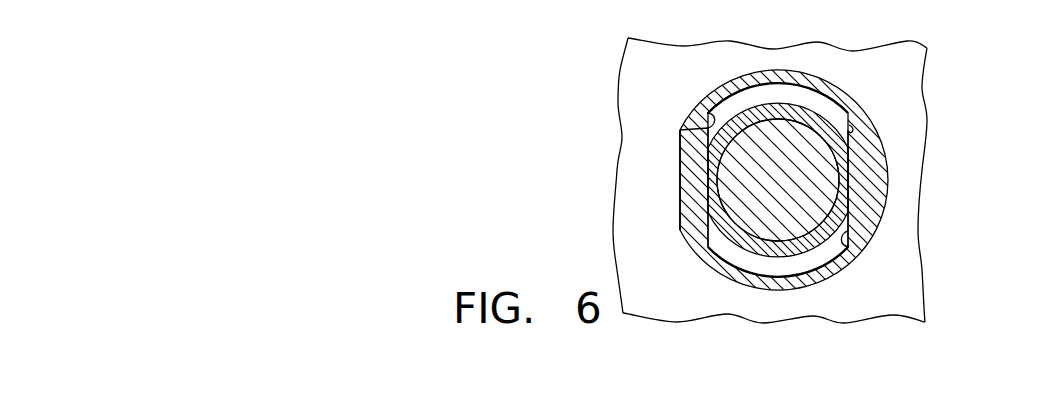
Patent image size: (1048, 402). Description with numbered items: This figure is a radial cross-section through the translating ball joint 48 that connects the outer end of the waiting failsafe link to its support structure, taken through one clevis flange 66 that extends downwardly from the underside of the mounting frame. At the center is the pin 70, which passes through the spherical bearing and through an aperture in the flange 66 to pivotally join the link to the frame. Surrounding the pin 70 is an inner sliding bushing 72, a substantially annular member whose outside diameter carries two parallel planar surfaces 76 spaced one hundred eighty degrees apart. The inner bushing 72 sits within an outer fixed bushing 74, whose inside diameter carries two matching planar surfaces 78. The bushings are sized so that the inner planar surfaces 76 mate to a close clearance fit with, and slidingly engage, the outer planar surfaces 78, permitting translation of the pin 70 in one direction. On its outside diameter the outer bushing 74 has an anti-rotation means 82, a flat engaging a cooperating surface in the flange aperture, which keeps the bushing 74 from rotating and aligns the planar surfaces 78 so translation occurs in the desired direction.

The eighth joint 48 is at (813, 180).
The first flange 66 is at (852, 311).
The pin 70 is at (800, 182).
The inner sliding bushing 72 is at (804, 110).
The outer fixed bushing 74 is at (690, 233).
The planar surfaces 76 is at (703, 183).
The planar surfaces 78 is at (710, 108).
The anti-rotation means 82 is at (680, 167).